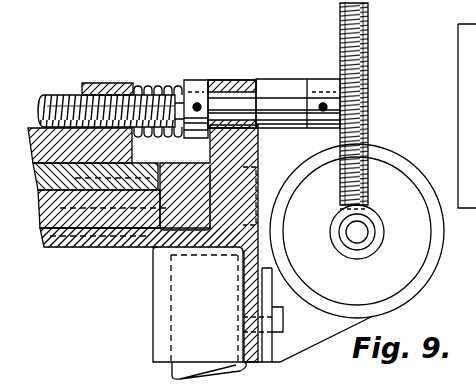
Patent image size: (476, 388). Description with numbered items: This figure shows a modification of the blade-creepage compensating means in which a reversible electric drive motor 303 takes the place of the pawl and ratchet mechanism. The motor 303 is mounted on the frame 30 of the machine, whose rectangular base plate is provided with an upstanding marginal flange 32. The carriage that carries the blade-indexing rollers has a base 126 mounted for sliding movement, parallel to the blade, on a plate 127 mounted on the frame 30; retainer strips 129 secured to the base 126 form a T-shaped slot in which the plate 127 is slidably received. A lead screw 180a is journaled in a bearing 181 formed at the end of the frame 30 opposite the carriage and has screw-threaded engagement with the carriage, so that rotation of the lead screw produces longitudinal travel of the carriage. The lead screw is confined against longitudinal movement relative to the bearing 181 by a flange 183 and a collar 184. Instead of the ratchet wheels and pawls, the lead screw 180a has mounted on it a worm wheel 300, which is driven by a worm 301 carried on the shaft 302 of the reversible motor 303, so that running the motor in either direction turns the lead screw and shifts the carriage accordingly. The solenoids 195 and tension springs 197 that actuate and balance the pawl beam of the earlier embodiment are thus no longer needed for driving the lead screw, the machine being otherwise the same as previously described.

The base or frame plate 30 is at (46, 248).
The upstanding marginal flange 32 is at (252, 190).
The base of carriage 126 is at (27, 132).
The plate 127 is at (158, 186).
The retainer strips 129 is at (117, 207).
The lead screw 180a is at (72, 95).
The bearing 181 is at (213, 80).
The flange 183 is at (272, 80).
The collar 184 is at (205, 80).
The solenoids 195 is at (173, 375).
The tension springs 197 is at (154, 85).
The worm wheel 300 is at (369, 40).
The worm 301 is at (352, 258).
The shaft 302 is at (363, 232).
The reversible electric drive motor 303 is at (438, 278).